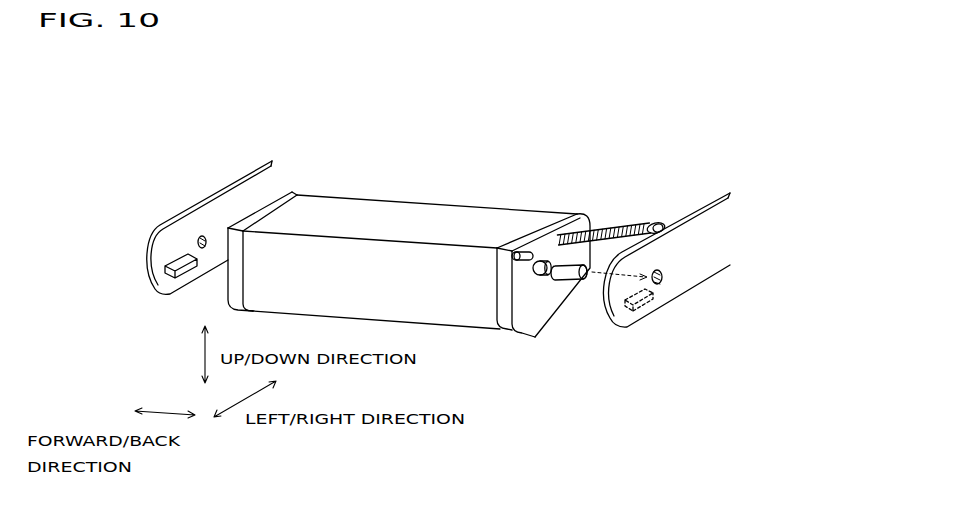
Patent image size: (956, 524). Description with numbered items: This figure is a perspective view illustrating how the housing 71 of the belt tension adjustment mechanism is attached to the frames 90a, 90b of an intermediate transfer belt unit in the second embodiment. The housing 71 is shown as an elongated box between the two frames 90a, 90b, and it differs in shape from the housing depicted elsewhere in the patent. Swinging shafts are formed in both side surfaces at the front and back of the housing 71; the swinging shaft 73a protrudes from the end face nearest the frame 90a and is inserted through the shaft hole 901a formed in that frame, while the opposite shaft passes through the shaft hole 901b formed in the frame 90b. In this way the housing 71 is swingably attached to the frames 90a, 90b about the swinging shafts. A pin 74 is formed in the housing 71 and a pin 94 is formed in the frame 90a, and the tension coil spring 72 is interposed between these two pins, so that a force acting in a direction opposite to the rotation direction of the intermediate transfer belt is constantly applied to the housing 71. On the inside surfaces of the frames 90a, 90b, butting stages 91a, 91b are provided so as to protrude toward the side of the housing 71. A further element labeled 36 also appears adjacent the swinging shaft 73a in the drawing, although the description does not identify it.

The housing 71 is at (402, 220).
The pin 74 is at (512, 246).
The connecting portion 36 is at (537, 276).
The swinging shaft 73a is at (558, 280).
The tension coil spring 72 is at (603, 228).
The pin 94 is at (654, 224).
The frame 90a is at (708, 244).
The shaft hole 901a is at (667, 277).
The butting stage 91a is at (655, 293).
The frame 90b is at (243, 176).
The shaft hole 901b is at (206, 240).
The butting stage 91b is at (170, 254).